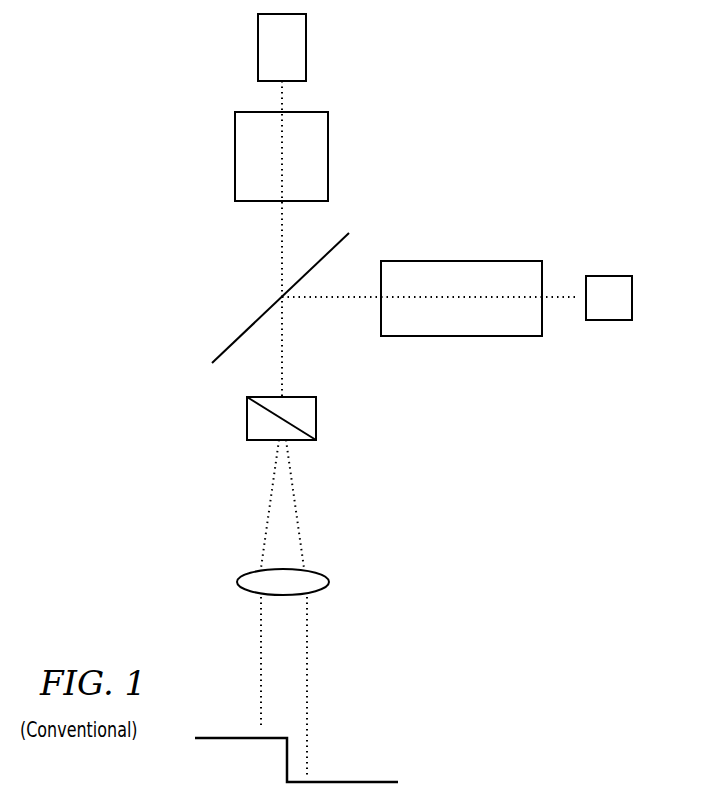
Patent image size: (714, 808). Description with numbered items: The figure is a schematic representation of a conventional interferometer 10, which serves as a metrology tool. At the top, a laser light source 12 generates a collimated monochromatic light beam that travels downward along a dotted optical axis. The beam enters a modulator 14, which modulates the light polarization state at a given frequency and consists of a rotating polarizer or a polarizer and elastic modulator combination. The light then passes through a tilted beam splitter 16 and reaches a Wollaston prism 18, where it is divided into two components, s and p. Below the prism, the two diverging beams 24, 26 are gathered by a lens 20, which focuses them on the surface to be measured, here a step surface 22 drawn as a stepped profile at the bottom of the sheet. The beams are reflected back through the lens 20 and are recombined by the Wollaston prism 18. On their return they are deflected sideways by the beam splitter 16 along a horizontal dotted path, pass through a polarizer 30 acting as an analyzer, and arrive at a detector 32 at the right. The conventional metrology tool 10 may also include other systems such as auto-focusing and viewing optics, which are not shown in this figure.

The interferometer 10 is at (430, 149).
The laser light source 12 is at (257, 68).
The modulator 14 is at (235, 185).
The beam splitter 16 is at (228, 348).
The Wollaston prism 18 is at (316, 418).
The lens 20 is at (329, 582).
The step surface 22 is at (217, 735).
The first beam 24 is at (257, 642).
The second beam 26 is at (308, 648).
The polarizer 30 is at (520, 336).
The detector 32 is at (621, 320).